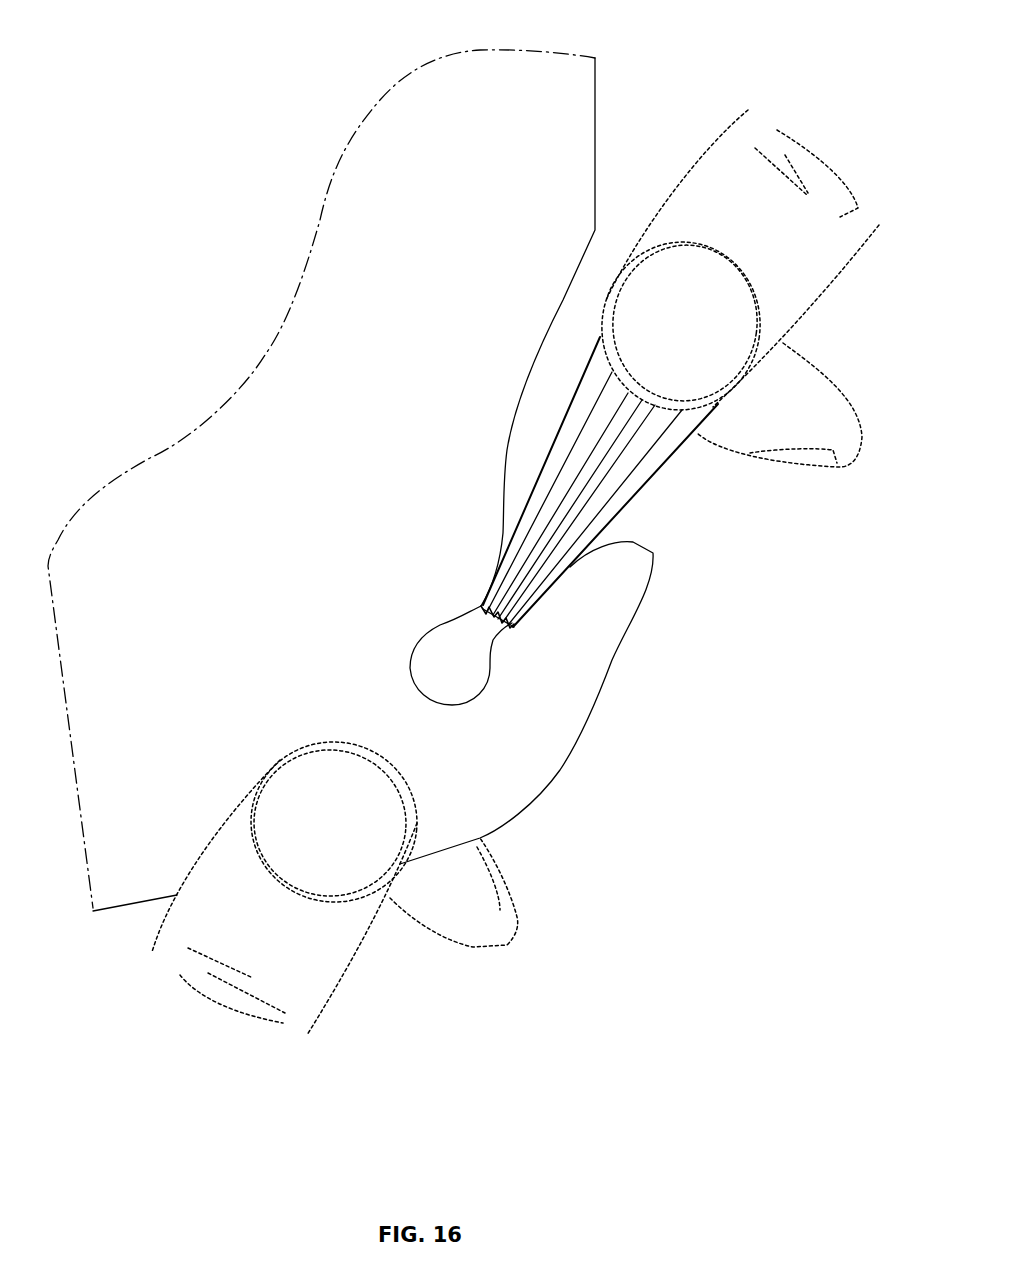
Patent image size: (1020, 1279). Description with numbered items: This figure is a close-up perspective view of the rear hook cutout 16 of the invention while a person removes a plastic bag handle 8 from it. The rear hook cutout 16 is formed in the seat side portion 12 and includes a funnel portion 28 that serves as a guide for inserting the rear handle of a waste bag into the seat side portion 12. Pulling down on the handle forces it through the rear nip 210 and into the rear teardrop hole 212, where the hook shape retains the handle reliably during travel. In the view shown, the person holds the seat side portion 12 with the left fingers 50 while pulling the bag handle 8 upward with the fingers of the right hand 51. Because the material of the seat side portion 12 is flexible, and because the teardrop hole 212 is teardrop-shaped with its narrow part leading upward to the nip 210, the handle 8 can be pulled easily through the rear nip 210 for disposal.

The bag handle 8 is at (608, 437).
The seat side portion 12 is at (274, 671).
The rear hook cutout 16 is at (640, 708).
The funnel portion 28 is at (622, 527).
The left fingers 50 is at (442, 970).
The right hand 51 is at (837, 515).
The rear nip 210 is at (523, 616).
The rear teardrop hole 212 is at (447, 648).